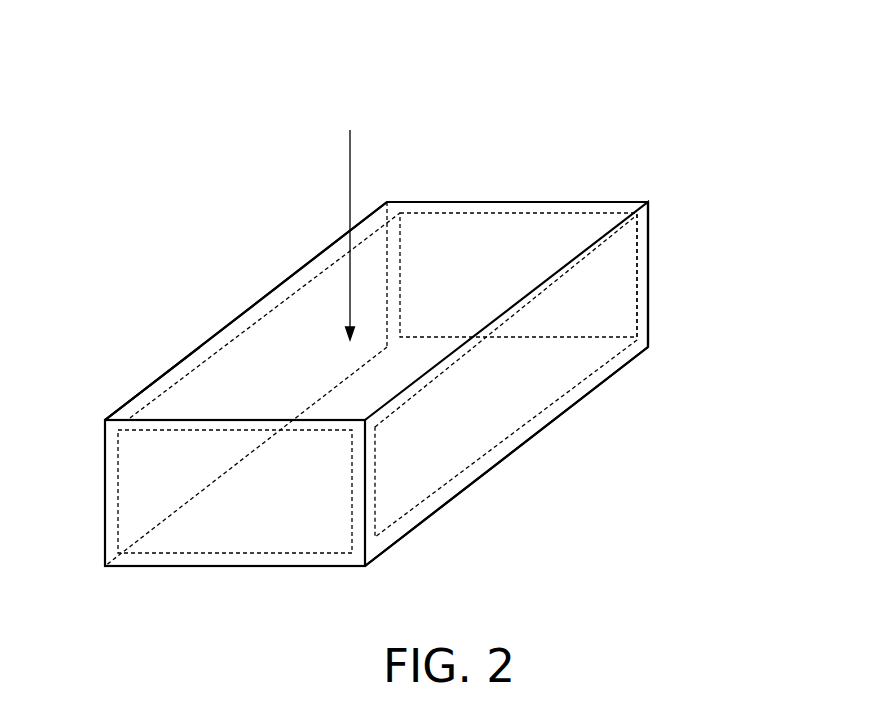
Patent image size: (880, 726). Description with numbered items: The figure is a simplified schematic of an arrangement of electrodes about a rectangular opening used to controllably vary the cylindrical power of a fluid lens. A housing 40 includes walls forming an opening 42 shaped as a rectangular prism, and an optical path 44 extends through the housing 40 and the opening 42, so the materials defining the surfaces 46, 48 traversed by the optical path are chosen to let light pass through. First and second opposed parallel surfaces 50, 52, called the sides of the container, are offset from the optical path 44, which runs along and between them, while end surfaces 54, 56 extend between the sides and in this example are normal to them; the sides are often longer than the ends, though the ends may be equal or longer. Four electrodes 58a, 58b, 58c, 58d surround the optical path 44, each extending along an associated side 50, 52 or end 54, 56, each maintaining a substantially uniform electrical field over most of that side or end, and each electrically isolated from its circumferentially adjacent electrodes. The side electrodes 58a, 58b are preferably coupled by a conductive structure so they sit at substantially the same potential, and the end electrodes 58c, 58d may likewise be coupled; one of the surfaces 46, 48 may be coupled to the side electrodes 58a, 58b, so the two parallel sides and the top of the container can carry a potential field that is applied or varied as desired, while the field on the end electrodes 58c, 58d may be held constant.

The housing 40 is at (407, 297).
The opening 42 is at (165, 371).
The optical path 44 is at (347, 190).
The surface 46 is at (608, 216).
The surface 48 is at (620, 375).
The first parallel surface 50 is at (266, 291).
The second parallel surface 52 is at (507, 407).
The end surface 54 is at (177, 530).
The end surface 56 is at (463, 198).
The side electrode 58a is at (290, 394).
The side electrode 58b is at (469, 457).
The end electrode 58c is at (282, 527).
The end electrode 58d is at (494, 272).